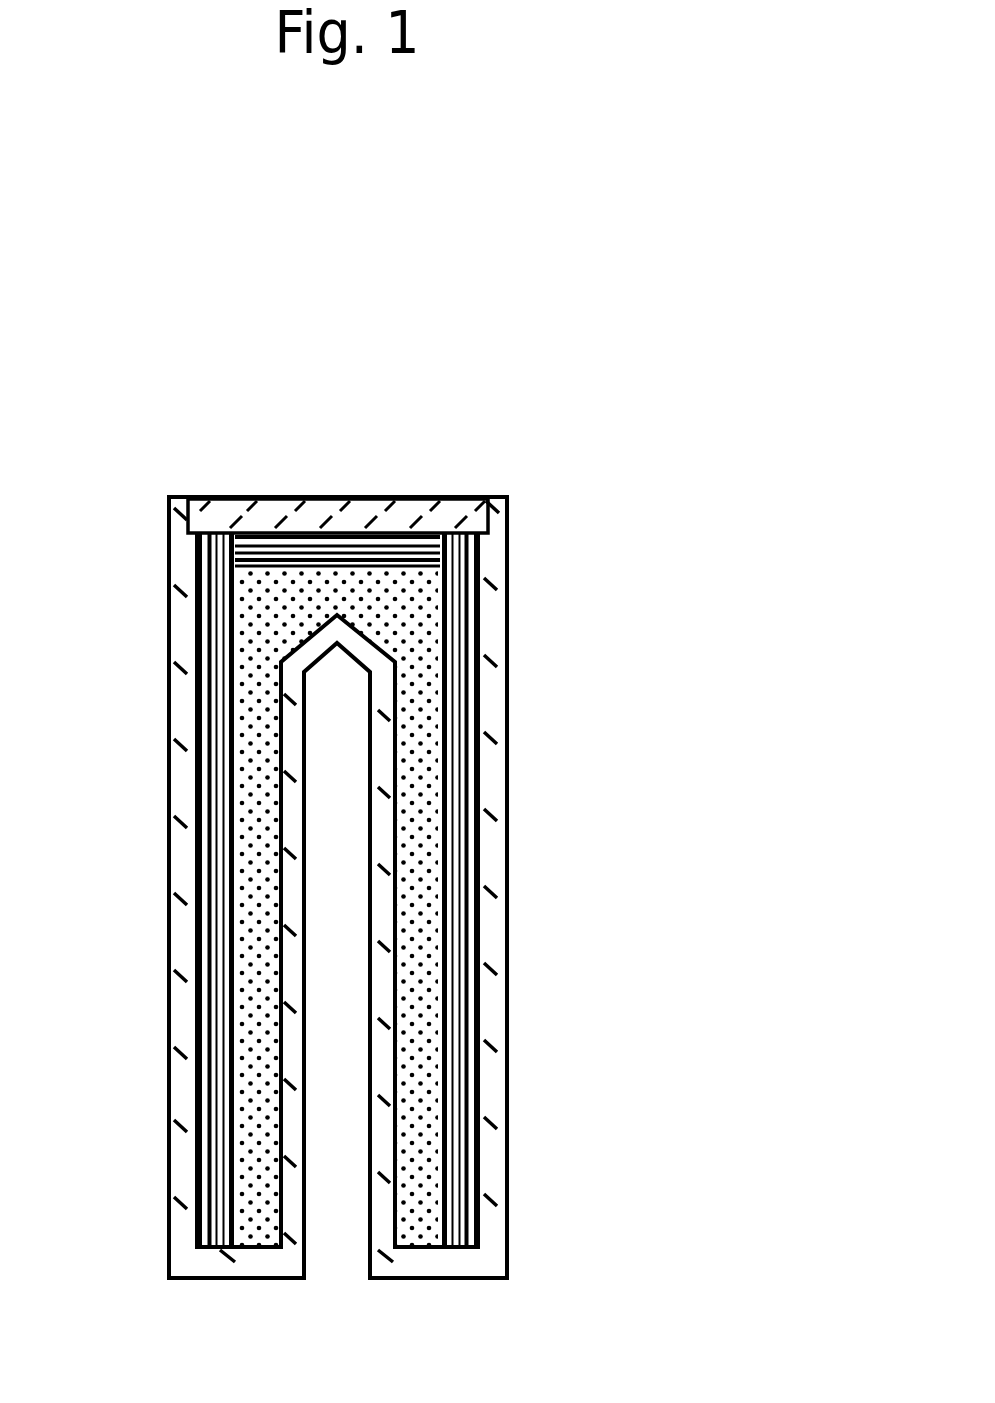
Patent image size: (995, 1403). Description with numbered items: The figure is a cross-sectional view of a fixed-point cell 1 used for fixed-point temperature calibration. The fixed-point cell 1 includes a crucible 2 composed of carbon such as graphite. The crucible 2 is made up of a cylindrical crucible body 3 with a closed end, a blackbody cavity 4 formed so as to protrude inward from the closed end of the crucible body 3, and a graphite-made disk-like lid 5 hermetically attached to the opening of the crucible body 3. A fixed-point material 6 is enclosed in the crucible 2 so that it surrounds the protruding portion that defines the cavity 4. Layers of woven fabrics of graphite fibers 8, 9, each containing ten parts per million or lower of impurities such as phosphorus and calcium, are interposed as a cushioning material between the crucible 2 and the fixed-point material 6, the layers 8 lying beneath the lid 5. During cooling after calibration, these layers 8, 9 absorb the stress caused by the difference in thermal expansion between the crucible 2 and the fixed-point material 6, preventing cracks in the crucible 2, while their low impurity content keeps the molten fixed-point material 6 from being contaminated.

The fixed-point cell 1 is at (713, 488).
The crucible 2 is at (538, 670).
The crucible body 3 is at (168, 1090).
The cavity 4 is at (350, 947).
The lid 5 is at (417, 497).
The fixed-point material 6 is at (440, 777).
The layers of woven fabrics of graphite fibers 8 is at (473, 573).
The layers of woven fabrics of graphite fibers 9 is at (273, 545).